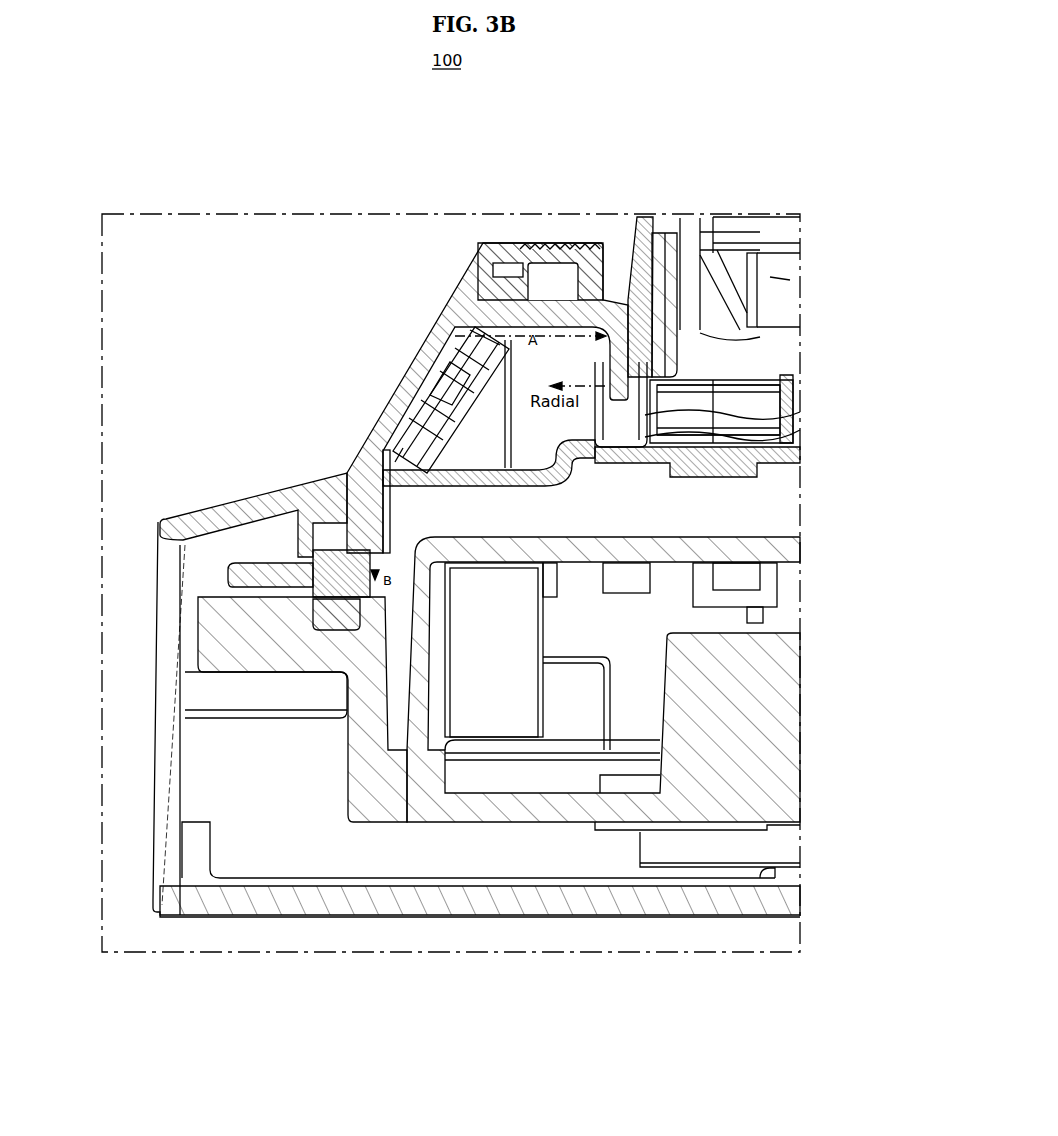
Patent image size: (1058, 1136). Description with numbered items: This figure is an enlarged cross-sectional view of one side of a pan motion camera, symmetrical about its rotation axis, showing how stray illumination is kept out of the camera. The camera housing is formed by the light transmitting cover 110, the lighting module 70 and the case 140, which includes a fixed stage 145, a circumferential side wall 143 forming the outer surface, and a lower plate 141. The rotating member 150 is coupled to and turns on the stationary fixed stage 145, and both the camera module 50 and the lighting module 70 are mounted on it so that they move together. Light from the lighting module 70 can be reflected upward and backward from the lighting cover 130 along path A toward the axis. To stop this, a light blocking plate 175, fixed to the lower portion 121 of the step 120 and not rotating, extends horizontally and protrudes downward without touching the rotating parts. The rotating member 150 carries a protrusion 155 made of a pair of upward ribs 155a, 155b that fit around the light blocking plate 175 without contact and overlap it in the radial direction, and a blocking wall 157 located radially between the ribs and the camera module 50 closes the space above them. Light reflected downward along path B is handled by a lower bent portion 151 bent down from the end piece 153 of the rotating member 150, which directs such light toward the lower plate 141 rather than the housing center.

The light transmitting cover 110 is at (628, 233).
The step 120 is at (538, 243).
The lower portion 121 is at (503, 243).
The lighting cover 130 is at (447, 300).
The case 140 is at (158, 580).
The lower plate 141 is at (767, 896).
The side wall 143 is at (165, 740).
The fixed stage 145 is at (800, 548).
The rotating member 150 is at (665, 462).
The lower bent portion 151 is at (390, 513).
The end piece 153 is at (445, 486).
The protrusion 155 is at (783, 409).
The upward rib 155a is at (760, 404).
The upward rib 155b is at (760, 428).
The blocking wall 157 is at (700, 328).
The light blocking plate 175 is at (680, 238).
The camera module 50 is at (783, 277).
The lighting module 70 is at (440, 390).